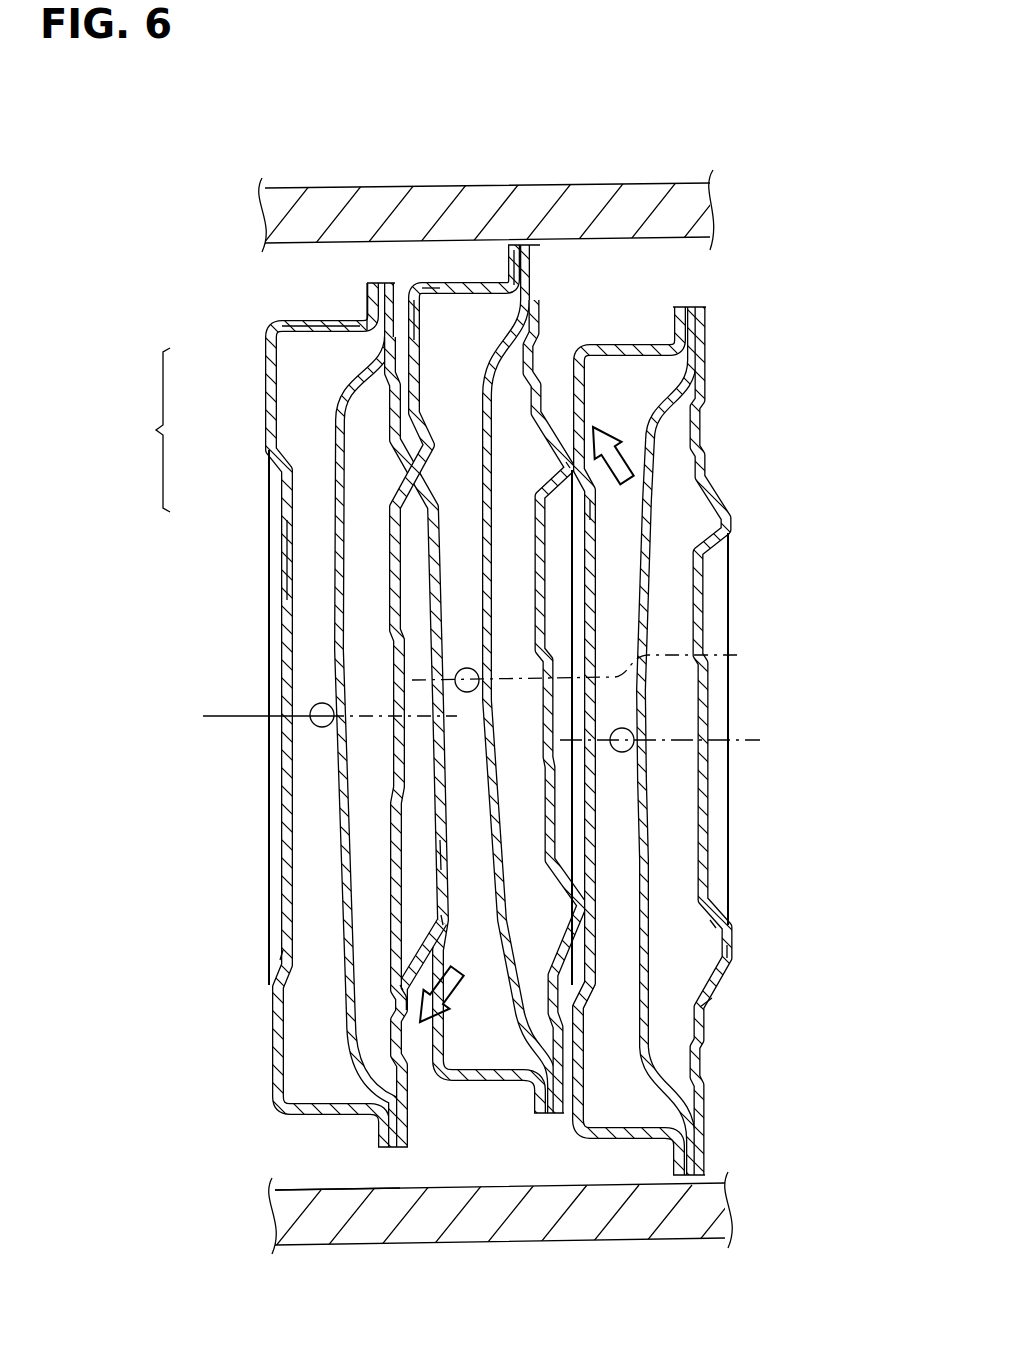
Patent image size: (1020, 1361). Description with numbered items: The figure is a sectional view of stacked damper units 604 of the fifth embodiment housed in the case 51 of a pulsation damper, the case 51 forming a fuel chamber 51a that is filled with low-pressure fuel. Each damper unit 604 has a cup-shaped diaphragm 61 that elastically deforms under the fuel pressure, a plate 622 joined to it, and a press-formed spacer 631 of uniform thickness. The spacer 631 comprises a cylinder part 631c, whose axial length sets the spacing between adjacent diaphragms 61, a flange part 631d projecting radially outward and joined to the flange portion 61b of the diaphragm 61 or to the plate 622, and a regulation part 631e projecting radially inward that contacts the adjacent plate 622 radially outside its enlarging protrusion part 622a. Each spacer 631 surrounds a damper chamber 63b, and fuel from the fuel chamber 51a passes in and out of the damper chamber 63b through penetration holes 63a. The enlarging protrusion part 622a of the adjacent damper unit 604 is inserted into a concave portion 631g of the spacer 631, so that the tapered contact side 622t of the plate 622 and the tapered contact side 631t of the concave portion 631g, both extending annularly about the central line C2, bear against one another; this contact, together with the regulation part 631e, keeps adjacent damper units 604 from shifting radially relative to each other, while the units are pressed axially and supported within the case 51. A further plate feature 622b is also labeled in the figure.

The case 51 is at (400, 1245).
The fuel chamber 51a is at (330, 1158).
The diaphragm 61 is at (335, 425).
The flange portion 61b is at (365, 300).
The penetration hole 63a is at (320, 318).
The damper chamber 63b is at (308, 572).
The damper unit 604 is at (388, 771).
The plate 622 is at (392, 482).
The enlarging protrusion part 622a is at (725, 950).
The inner plate bent portion 622b is at (708, 930).
The contact side 622t is at (576, 440).
The spacer 631 is at (262, 372).
The cylinder part 631c is at (430, 298).
The flange part 631d is at (498, 285).
The regulation part 631e is at (417, 330).
The concave portion 631g is at (428, 858).
The contact side 631t is at (422, 930).
The central line C2 is at (768, 643).